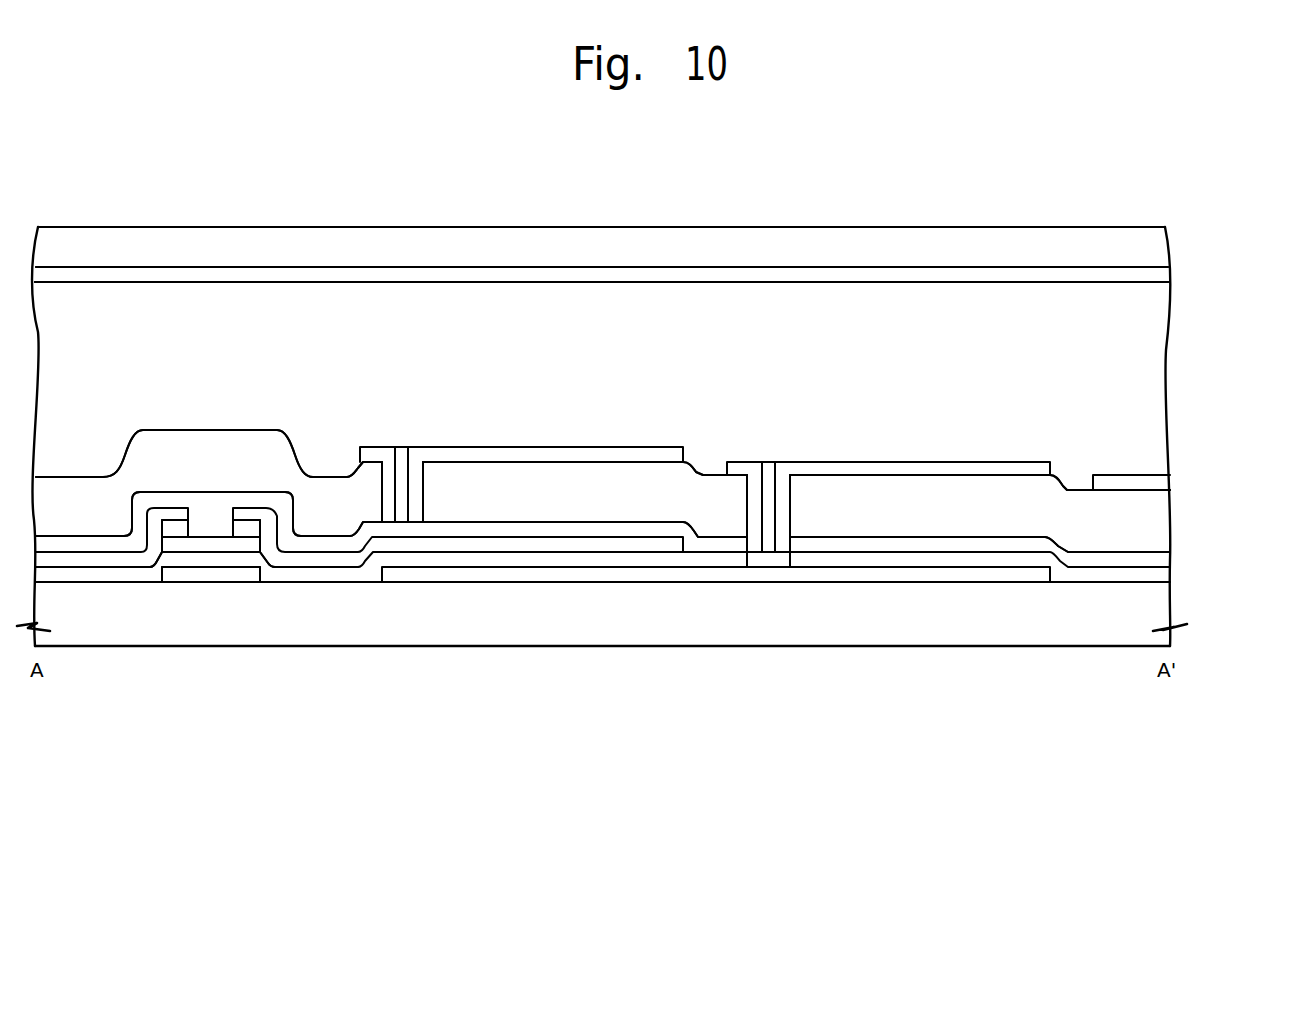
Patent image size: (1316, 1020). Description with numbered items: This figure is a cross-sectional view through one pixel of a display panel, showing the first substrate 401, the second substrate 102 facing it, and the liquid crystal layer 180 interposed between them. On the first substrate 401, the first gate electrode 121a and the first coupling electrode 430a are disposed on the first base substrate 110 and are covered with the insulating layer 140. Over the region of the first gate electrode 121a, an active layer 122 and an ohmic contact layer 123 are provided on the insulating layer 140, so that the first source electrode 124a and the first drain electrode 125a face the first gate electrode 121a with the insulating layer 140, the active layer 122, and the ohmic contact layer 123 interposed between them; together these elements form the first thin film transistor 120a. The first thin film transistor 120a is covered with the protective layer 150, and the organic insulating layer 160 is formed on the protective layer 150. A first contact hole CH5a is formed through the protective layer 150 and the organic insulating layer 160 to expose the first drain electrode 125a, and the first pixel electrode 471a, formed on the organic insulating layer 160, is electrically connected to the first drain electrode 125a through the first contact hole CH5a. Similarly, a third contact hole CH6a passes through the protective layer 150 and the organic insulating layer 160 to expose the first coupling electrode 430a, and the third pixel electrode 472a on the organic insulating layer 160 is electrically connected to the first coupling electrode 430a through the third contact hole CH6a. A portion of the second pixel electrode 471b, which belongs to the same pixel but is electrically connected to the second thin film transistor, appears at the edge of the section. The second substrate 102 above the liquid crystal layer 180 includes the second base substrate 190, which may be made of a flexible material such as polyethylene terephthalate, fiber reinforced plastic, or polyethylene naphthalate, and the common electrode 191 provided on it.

The second substrate 102 is at (1252, 235).
The second base substrate 190 is at (1162, 247).
The common electrode 191 is at (1162, 275).
The liquid crystal layer 180 is at (1162, 378).
The first pixel electrode 471a is at (463, 453).
The third pixel electrode 472a is at (830, 468).
The first contact hole CH5a is at (425, 492).
The third contact hole CH6a is at (790, 507).
The second pixel electrode 471b is at (1167, 482).
The organic insulating layer 160 is at (1162, 523).
The protective layer 150 is at (1162, 560).
The insulating layer 140 is at (1162, 578).
The first base substrate 110 is at (1170, 602).
The first substrate 401 is at (1252, 513).
The first coupling electrode 430a is at (708, 573).
The first thin film transistor 120a is at (337, 695).
The first gate electrode 121a is at (210, 573).
The active layer 122 is at (242, 543).
The ohmic contact layer 123 is at (177, 530).
The first source electrode 124a is at (111, 558).
The first drain electrode 125a is at (315, 560).